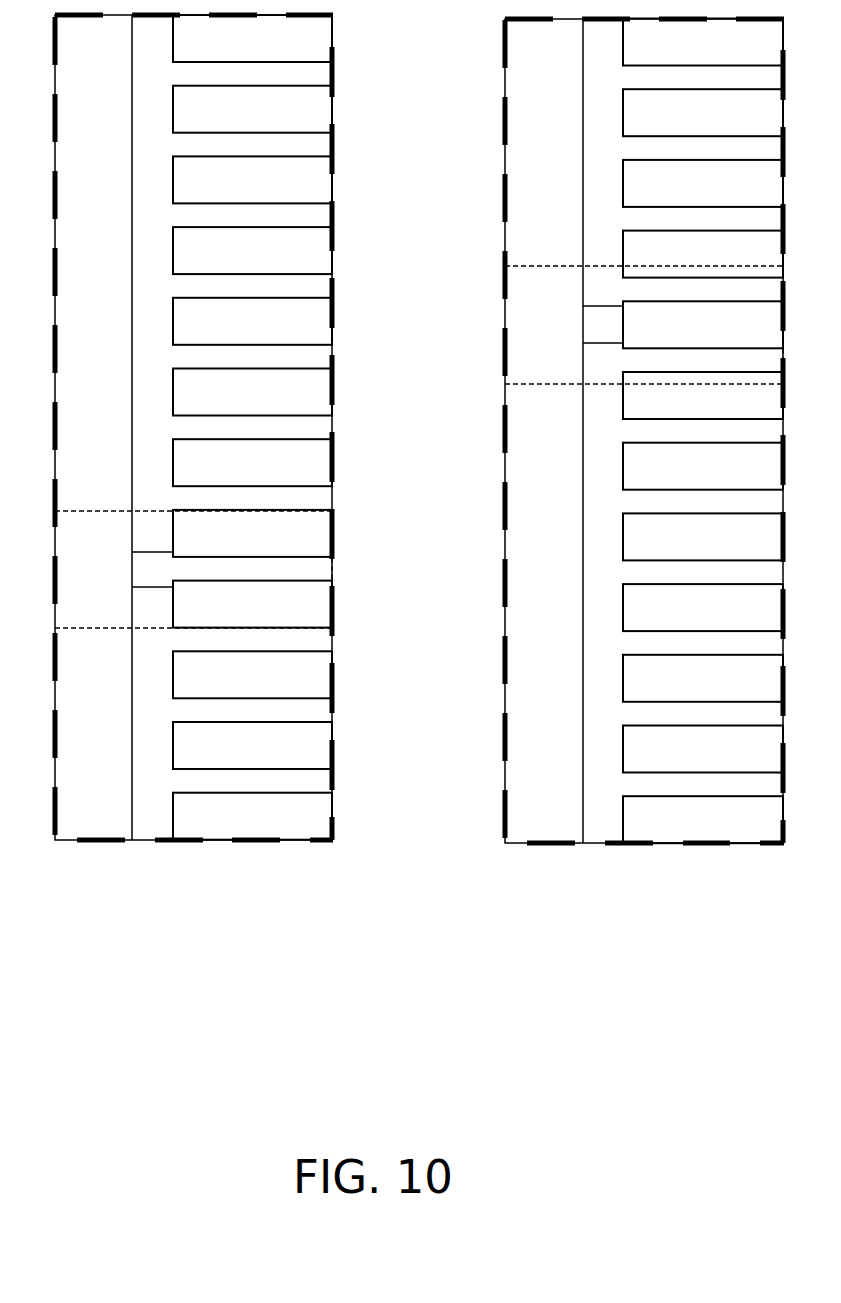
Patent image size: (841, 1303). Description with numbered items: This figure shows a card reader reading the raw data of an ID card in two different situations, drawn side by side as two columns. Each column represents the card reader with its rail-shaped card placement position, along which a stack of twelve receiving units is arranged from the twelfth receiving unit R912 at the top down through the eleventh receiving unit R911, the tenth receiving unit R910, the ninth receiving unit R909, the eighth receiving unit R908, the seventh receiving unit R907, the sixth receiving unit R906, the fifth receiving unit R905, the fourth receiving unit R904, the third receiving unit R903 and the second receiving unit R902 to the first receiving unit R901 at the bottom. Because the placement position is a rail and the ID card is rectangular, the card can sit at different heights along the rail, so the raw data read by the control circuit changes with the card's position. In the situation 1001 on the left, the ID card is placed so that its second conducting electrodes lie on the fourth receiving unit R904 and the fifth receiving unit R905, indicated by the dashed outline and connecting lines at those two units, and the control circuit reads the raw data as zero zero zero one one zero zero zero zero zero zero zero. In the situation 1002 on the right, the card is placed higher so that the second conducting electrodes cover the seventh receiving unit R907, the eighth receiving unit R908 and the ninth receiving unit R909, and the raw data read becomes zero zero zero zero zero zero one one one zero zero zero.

The situation 1001 is at (194, 470).
The situation 1002 is at (644, 479).
The first receiving unit R901 is at (478, 818).
The second receiving unit R902 is at (478, 747).
The third receiving unit R903 is at (478, 676).
The fourth receiving unit R904 is at (478, 606).
The fifth receiving unit R905 is at (478, 535).
The sixth receiving unit R906 is at (478, 464).
The seventh receiving unit R907 is at (478, 394).
The eighth receiving unit R908 is at (478, 323).
The ninth receiving unit R909 is at (478, 252).
The tenth receiving unit R910 is at (478, 181).
The eleventh receiving unit R911 is at (478, 111).
The twelfth receiving unit R912 is at (478, 40).